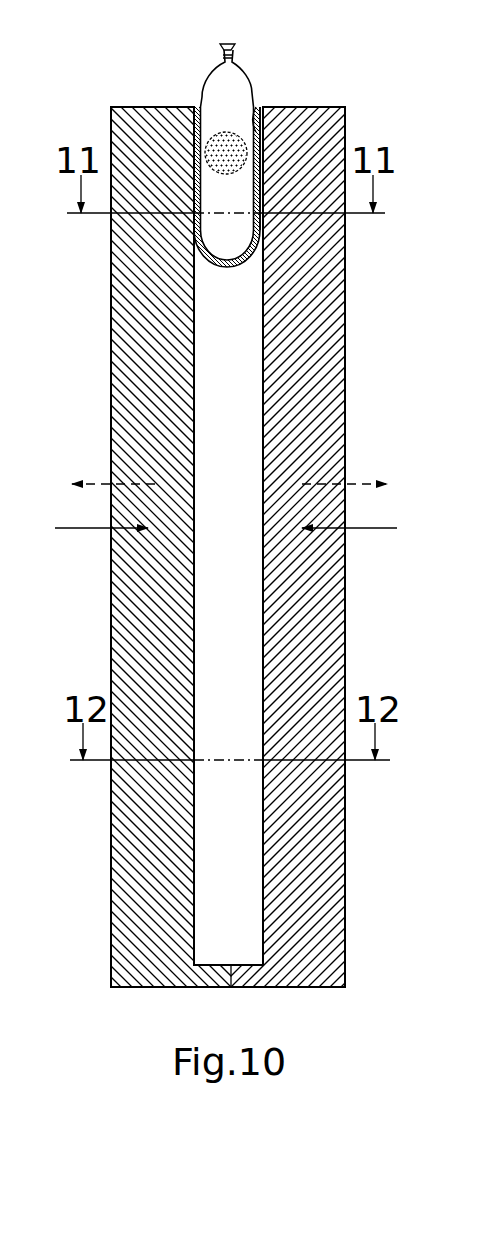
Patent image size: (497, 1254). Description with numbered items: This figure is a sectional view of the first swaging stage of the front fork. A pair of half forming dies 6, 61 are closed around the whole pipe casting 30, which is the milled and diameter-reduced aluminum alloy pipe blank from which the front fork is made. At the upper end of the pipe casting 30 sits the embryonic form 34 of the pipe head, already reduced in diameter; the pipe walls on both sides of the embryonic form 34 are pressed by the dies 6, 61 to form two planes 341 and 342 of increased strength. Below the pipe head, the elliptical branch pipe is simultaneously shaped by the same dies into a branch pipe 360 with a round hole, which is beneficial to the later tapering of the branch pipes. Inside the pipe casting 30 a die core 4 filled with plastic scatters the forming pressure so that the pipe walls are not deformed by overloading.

The die core 4 is at (254, 82).
The half forming die 6 is at (138, 351).
The pipe casting 30 is at (218, 424).
The embryonic form of the pipe head 34 is at (259, 108).
The half forming die 61 is at (327, 333).
The plane 341 is at (190, 148).
The plane 342 is at (261, 143).
The branch pipe 360 is at (237, 590).